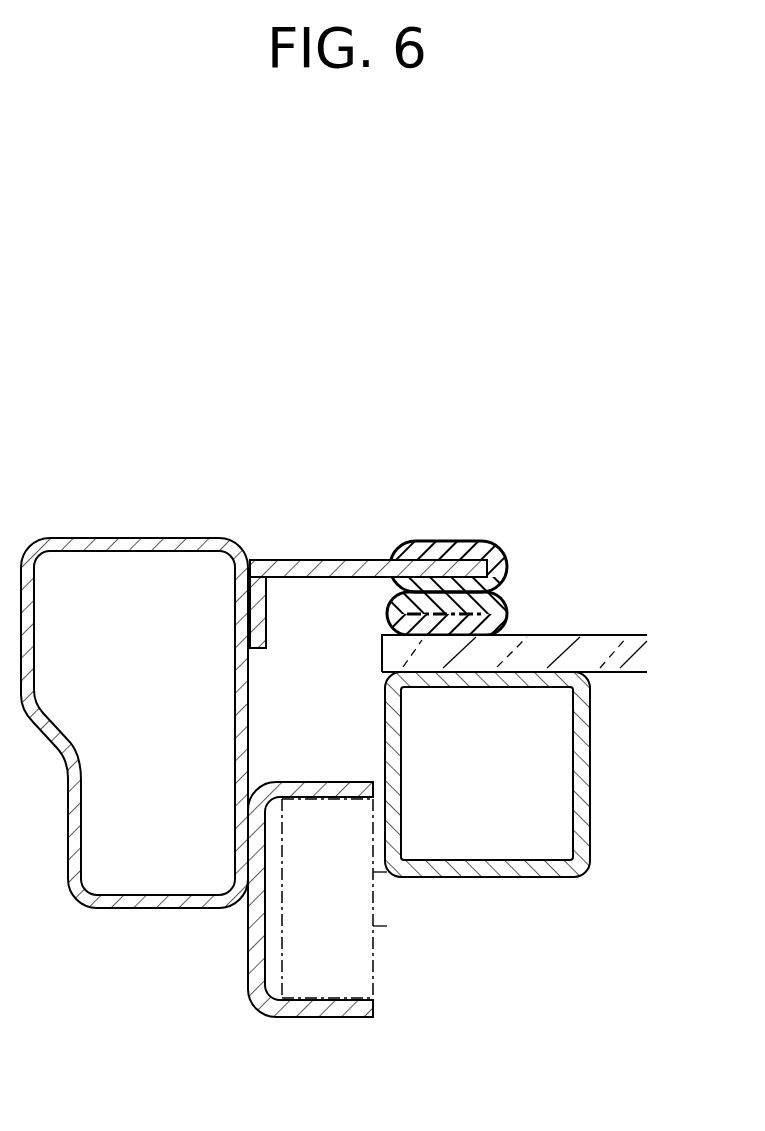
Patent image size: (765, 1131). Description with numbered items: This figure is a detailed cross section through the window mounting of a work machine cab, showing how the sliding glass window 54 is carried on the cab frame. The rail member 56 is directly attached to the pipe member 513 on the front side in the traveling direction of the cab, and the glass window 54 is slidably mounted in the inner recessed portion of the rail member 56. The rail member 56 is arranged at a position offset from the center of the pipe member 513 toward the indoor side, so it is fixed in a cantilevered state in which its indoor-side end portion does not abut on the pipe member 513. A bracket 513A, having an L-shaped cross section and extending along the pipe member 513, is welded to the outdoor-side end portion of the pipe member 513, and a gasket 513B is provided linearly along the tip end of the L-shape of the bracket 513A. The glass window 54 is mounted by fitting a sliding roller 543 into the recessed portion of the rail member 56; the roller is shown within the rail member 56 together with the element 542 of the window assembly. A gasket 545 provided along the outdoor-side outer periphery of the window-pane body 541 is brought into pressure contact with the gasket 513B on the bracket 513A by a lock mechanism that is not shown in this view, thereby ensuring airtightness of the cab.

The pipe member 513 is at (105, 543).
The bracket 513A is at (306, 563).
The gasket 513B is at (450, 545).
The gasket 545 is at (507, 617).
The glass window 54 is at (532, 709).
The window-pane body 541 is at (627, 673).
The hollow frame portion 542 is at (588, 806).
The sliding roller 543 is at (352, 968).
The rail member 56 is at (253, 983).